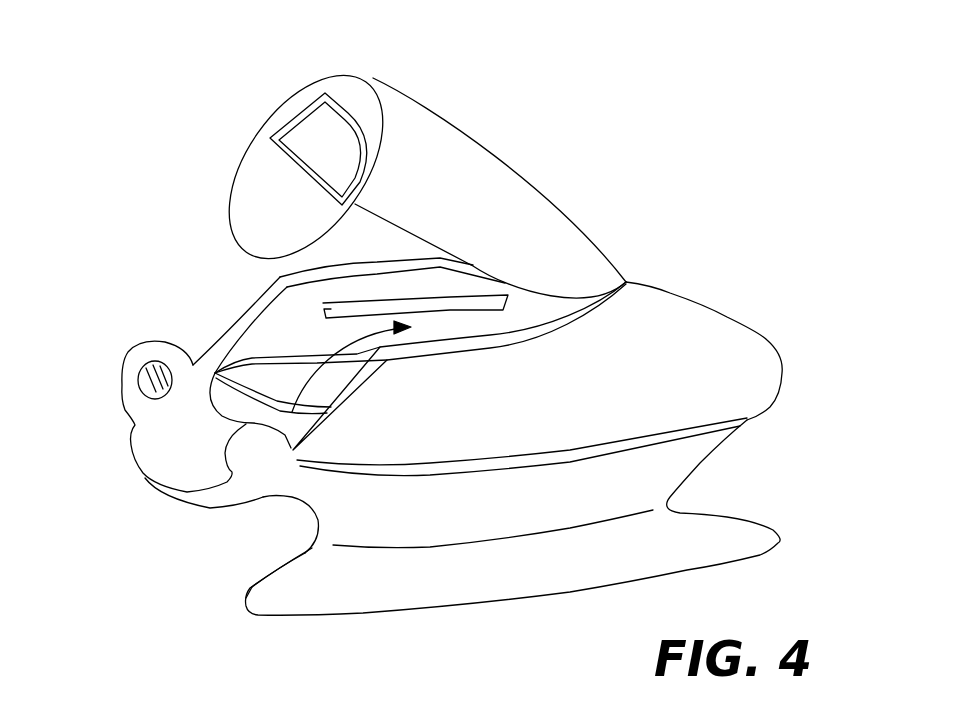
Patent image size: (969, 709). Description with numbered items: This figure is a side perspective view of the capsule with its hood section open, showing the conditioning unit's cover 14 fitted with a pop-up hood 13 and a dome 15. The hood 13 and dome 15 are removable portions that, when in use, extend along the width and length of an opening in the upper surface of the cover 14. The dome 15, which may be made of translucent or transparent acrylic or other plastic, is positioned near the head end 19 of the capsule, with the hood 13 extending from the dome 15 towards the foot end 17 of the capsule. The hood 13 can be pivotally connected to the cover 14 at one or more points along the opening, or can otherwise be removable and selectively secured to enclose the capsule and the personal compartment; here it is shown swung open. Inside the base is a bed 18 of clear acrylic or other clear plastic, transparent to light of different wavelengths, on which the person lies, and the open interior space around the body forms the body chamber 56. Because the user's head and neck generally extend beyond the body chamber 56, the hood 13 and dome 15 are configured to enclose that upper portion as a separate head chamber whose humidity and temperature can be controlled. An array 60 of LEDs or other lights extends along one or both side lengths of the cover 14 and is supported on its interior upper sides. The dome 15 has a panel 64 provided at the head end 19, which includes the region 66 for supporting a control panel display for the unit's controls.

The pop-up hood 13 is at (523, 184).
The cover 14 is at (682, 315).
The dome 15 is at (277, 158).
The foot end 17 is at (805, 312).
The bed 18 is at (297, 377).
The head end 19 is at (107, 314).
The body chamber 56 is at (292, 412).
The array of LEDs 60 is at (324, 309).
The panel 64 is at (340, 123).
The region 66 is at (307, 104).